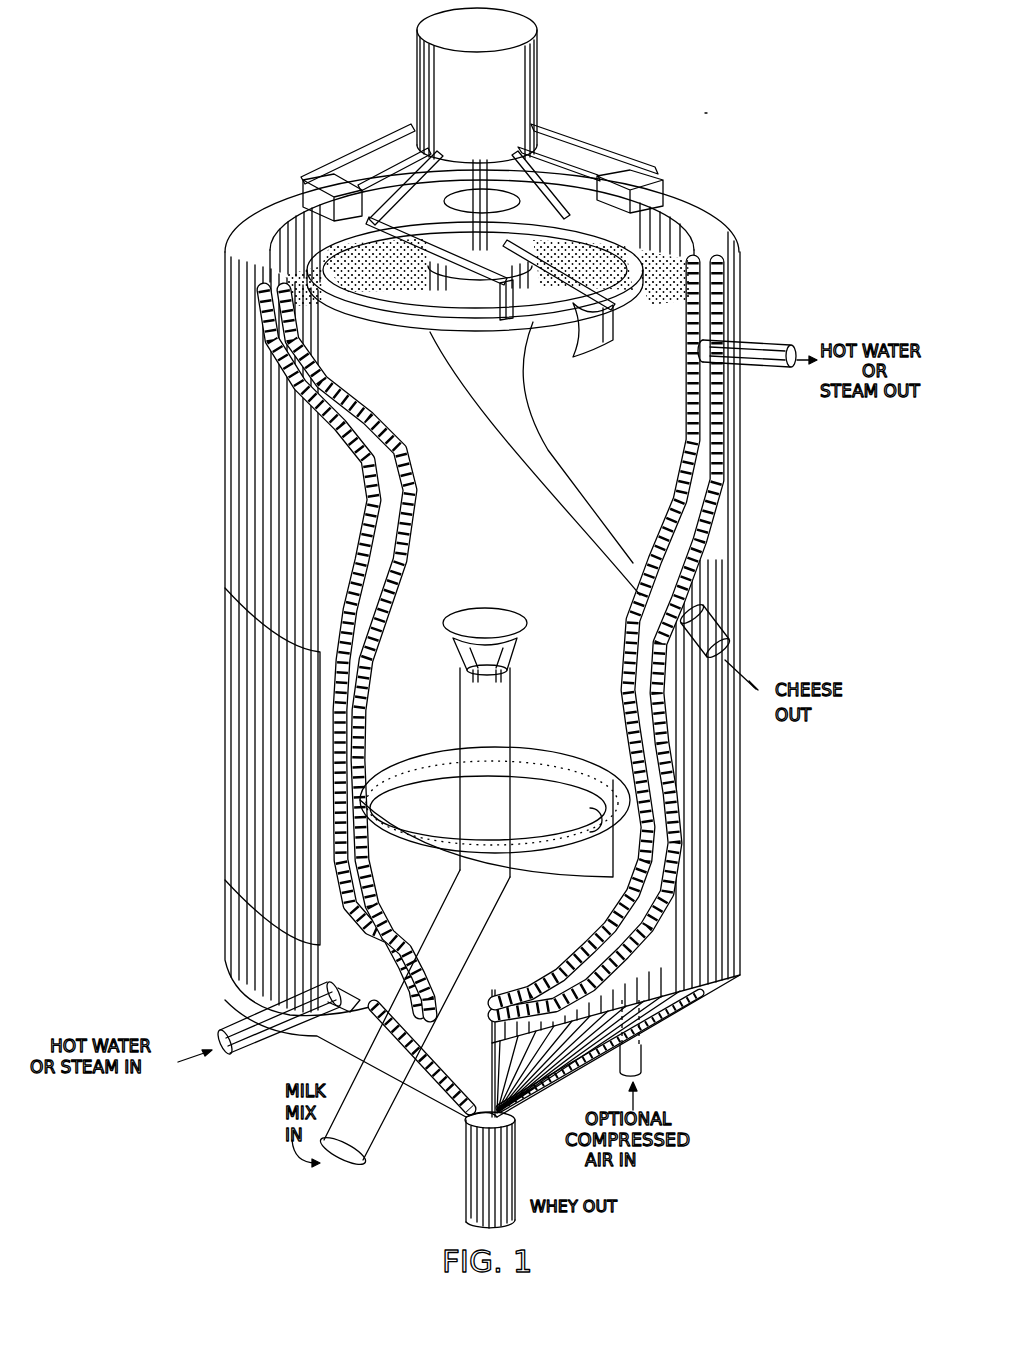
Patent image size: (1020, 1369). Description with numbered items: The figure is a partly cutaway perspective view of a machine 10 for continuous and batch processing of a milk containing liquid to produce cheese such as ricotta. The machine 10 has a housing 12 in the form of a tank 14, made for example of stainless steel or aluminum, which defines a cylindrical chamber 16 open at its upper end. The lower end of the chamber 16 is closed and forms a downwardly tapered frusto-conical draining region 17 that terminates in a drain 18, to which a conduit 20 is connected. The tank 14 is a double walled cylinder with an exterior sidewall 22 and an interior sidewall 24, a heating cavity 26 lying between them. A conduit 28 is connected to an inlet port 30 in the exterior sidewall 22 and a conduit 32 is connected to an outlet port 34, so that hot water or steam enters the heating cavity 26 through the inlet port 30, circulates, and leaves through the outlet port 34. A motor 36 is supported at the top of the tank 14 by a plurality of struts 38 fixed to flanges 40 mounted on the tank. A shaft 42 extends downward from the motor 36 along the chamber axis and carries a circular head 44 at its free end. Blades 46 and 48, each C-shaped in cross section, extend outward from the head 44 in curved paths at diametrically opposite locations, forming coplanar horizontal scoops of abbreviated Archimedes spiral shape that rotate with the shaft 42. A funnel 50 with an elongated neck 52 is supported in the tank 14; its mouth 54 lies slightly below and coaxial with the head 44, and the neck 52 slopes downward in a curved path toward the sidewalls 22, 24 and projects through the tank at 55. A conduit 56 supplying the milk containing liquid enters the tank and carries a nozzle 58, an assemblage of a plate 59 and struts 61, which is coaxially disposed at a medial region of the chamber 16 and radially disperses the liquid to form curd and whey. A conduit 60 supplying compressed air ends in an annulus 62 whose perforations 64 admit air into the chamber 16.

The machine 10 is at (692, 127).
The housing 12 is at (212, 358).
The tank 14 is at (232, 470).
The cylindrical chamber 16 is at (475, 499).
The frusto-conical draining region 17 is at (547, 959).
The drain 18 is at (468, 1058).
The conduit 20 is at (470, 1128).
The exterior sidewall 22 is at (718, 450).
The interior sidewall 24 is at (690, 440).
The heating cavity 26 is at (385, 538).
The conduit 28 is at (236, 1018).
The inlet port 30 is at (342, 990).
The conduit 32 is at (772, 370).
The outlet port 34 is at (738, 326).
The motor 36 is at (475, 116).
The struts 38 is at (556, 138).
The flanges 40 is at (655, 167).
The shaft 42 is at (458, 212).
The head 44 is at (515, 226).
The blade 46 is at (626, 336).
The blade 48 is at (352, 308).
The funnel 50 is at (510, 404).
The elongated neck 52 is at (588, 523).
The mouth 54 is at (530, 308).
The projection point 55 is at (692, 627).
The conduit 56 is at (482, 915).
The nozzle 58 is at (521, 650).
The plate 59 is at (494, 634).
The conduit 60 is at (612, 878).
The struts 61 is at (455, 660).
The annulus 62 is at (562, 752).
The perforations 64 is at (382, 772).